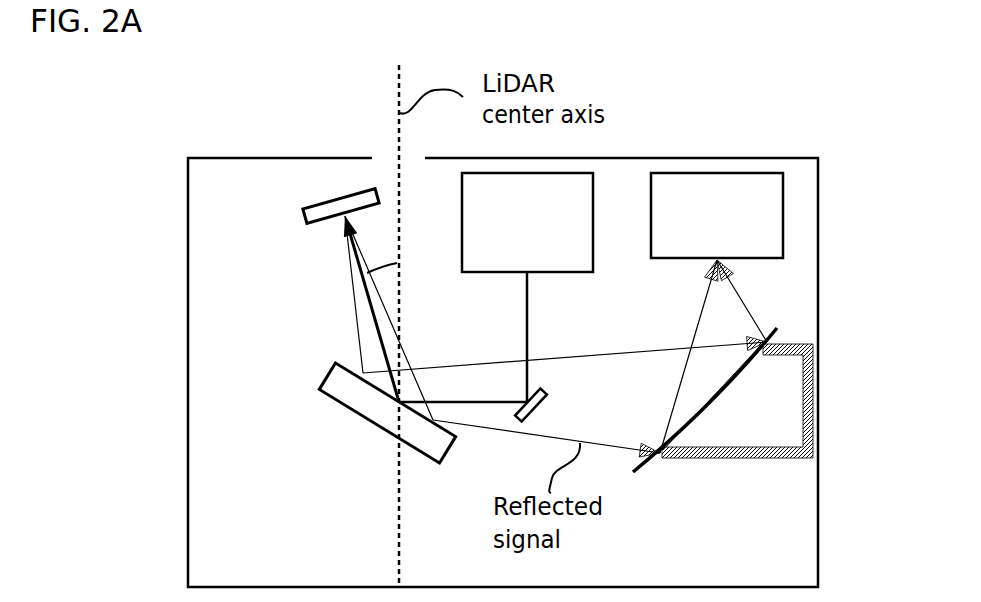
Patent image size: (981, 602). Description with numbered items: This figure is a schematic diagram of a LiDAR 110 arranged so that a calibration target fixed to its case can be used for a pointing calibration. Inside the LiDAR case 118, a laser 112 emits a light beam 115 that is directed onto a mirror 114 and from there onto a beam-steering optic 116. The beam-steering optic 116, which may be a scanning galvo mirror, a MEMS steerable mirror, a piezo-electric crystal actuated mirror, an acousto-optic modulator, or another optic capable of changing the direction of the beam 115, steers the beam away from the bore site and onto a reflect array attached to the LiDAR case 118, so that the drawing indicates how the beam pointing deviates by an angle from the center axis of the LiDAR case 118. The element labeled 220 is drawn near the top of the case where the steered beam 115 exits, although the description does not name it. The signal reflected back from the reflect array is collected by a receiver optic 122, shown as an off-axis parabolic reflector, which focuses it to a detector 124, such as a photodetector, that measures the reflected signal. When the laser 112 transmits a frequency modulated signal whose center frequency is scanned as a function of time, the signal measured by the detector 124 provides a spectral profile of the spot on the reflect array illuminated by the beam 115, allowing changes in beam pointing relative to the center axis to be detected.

The LiDAR 110 is at (458, 372).
The laser 112 is at (496, 287).
The mirror 114 is at (545, 393).
The light beam 115 is at (360, 268).
The beam-steering optic 116 is at (382, 440).
The LiDAR case 118 is at (188, 432).
The receiver optic 122 is at (720, 460).
The detector 124 is at (717, 215).
The mirror 220 is at (328, 203).